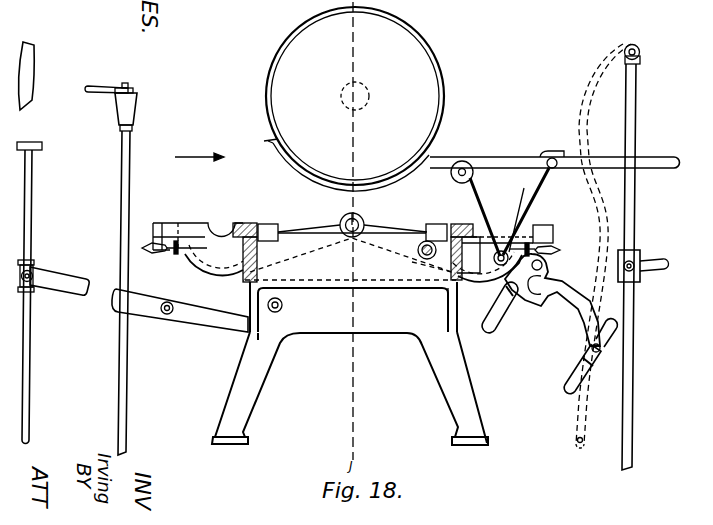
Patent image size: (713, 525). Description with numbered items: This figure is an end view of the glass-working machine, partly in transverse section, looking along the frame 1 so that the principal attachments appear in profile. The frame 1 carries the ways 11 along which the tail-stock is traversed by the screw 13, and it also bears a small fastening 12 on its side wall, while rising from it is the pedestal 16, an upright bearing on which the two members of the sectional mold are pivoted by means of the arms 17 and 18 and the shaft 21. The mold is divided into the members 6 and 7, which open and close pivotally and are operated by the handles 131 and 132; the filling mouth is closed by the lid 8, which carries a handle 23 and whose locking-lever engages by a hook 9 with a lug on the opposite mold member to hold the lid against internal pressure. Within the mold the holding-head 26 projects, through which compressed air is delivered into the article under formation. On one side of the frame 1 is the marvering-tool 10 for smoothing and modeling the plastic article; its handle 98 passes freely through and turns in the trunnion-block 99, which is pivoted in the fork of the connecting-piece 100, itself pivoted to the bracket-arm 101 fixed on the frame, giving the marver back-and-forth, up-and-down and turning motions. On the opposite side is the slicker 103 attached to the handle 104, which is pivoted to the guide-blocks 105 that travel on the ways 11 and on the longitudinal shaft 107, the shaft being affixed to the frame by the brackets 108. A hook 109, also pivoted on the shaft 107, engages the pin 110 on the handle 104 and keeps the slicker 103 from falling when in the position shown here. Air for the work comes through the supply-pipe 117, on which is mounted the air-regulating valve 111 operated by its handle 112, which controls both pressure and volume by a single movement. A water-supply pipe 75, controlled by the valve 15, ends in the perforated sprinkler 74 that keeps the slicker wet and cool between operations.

The frame 1 is at (350, 362).
The mold member 6 is at (186, 226).
The mold member 7 is at (461, 310).
The lid 8 is at (552, 300).
The hook 9 is at (622, 328).
The marvering-tool 10 is at (32, 84).
The ways 11 is at (246, 222).
The screw 12 is at (277, 313).
The screw 13 is at (352, 258).
The valve 15 is at (641, 262).
The pedestal 16 is at (344, 217).
The arms 17 is at (308, 223).
The arms 18 is at (395, 229).
The shaft 21 is at (360, 216).
The handle 23 is at (486, 326).
The holding-head 26 is at (367, 94).
The perforated sprinkler 74 is at (640, 49).
The water-supply pipe 75 is at (634, 368).
The handle 98 is at (31, 320).
The trunnion-block 99 is at (35, 267).
The connecting-piece 100 is at (83, 290).
The bracket-arm 101 is at (180, 310).
The slicker 103 is at (276, 160).
The handle 104 is at (649, 159).
The guide-blocks 105 is at (465, 183).
The longitudinal shaft 107 is at (497, 232).
The brackets 108 is at (482, 255).
The hook 109 is at (530, 186).
The pin 110 is at (553, 157).
The air-regulating valve 111 is at (133, 101).
The handle 112 is at (103, 99).
The supply-pipe 117 is at (128, 338).
The handle 131 is at (146, 240).
The handle 132 is at (547, 255).